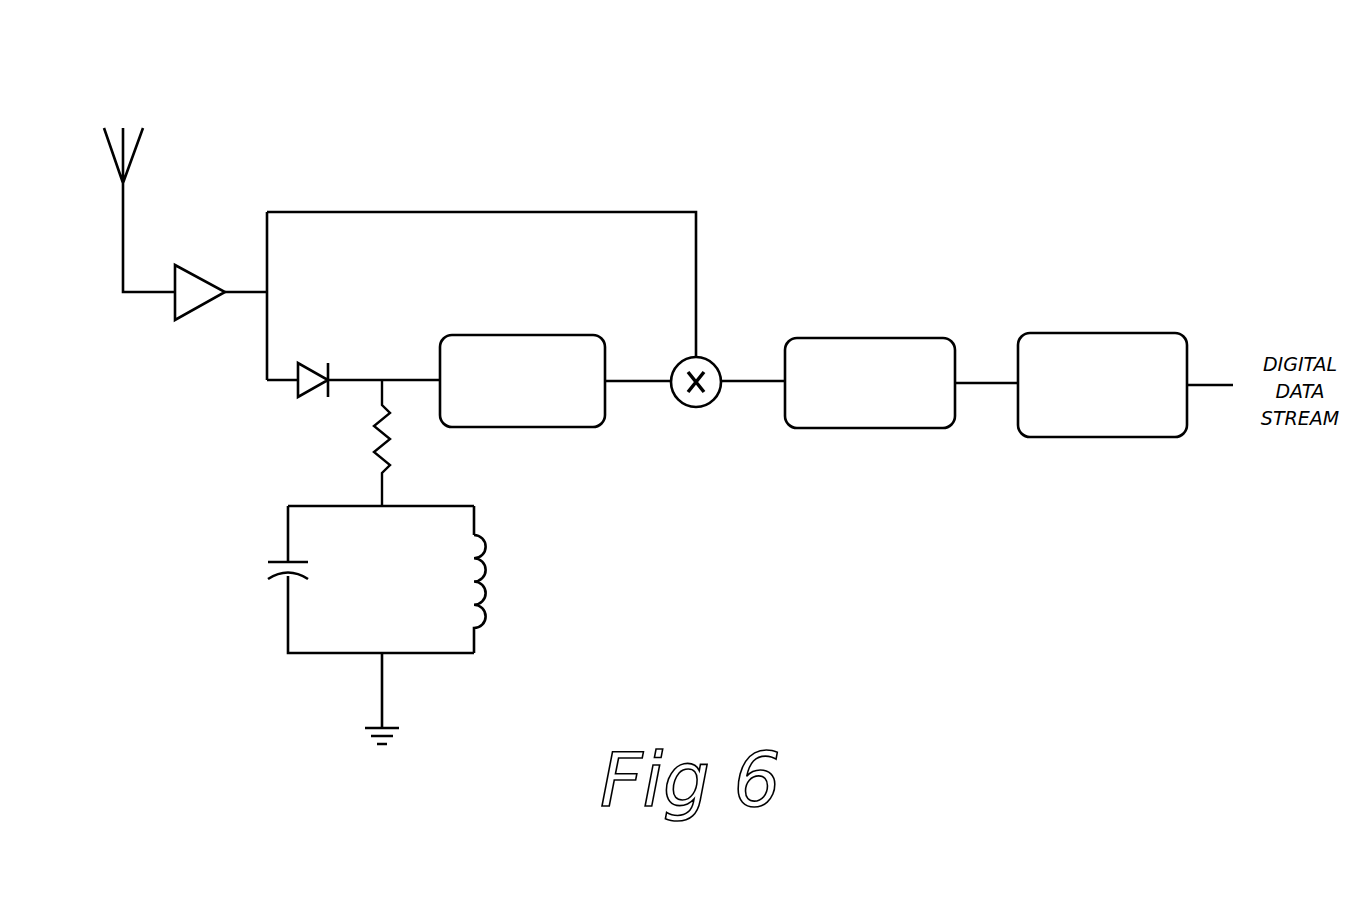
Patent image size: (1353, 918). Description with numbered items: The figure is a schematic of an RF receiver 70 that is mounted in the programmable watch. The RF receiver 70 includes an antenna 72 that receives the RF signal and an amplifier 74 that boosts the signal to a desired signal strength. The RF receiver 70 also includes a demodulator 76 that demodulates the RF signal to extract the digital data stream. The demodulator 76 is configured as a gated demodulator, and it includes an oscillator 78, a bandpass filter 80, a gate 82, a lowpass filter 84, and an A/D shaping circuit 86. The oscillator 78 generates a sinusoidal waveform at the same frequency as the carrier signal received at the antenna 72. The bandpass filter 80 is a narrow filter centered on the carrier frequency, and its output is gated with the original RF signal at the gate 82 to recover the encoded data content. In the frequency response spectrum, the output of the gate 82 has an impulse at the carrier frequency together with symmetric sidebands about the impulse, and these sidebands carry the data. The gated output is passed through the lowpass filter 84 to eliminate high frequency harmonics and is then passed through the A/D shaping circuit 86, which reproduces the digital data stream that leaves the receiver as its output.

The RF receiver 70 is at (540, 80).
The antenna 72 is at (128, 140).
The amplifier 74 is at (190, 281).
The demodulator 76 is at (770, 176).
The oscillator 78 is at (430, 655).
The bandpass filter 80 is at (565, 346).
The gate 82 is at (714, 372).
The lowpass filter 84 is at (915, 348).
The A/D shaping circuit 86 is at (1145, 346).